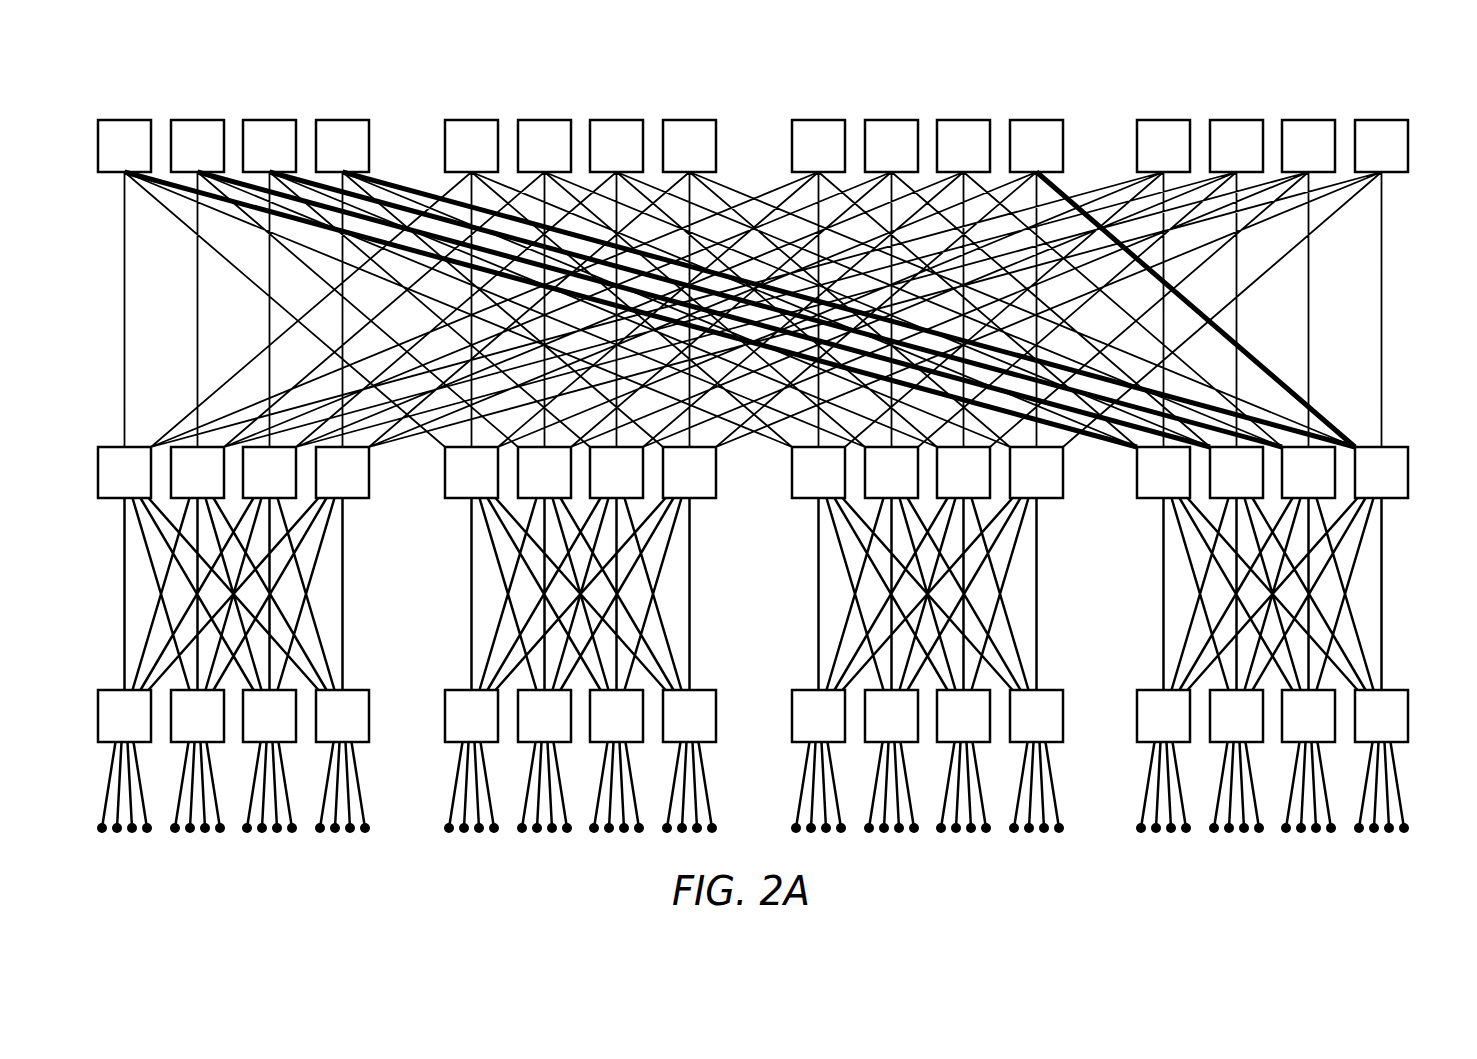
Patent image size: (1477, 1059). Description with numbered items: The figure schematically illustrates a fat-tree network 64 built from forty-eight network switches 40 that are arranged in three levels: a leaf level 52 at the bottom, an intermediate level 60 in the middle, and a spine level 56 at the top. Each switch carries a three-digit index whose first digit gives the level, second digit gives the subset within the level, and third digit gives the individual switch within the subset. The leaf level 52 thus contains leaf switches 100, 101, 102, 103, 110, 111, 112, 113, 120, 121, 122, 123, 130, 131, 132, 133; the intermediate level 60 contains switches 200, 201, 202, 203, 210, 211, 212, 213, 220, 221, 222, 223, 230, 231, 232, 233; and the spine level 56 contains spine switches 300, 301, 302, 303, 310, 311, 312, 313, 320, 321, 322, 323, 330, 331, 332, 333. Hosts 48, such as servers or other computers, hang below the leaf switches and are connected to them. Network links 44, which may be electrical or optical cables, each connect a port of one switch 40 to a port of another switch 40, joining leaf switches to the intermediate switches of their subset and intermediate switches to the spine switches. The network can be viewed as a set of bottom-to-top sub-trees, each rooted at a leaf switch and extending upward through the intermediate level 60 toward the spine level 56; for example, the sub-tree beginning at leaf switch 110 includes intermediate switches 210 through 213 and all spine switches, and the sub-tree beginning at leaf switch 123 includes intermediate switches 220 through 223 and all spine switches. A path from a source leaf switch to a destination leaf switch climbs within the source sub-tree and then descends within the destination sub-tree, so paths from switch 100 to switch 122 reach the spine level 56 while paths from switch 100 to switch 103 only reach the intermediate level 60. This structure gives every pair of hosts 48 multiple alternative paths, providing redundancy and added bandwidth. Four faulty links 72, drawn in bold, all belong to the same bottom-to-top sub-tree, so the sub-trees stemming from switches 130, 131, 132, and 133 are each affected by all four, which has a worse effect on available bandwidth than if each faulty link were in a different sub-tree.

The FT network 64 is at (154, 47).
The network switch 40 is at (552, 118).
The spine level 56 is at (1420, 146).
The intermediate level 60 is at (1420, 487).
The leaf level 52 is at (1420, 715).
The faulty link 72 is at (178, 192).
The network link 44 is at (197, 305).
The host 48 is at (102, 833).
The spine switch 300 is at (124, 146).
The spine switch 301 is at (197, 146).
The spine switch 302 is at (269, 146).
The spine switch 303 is at (342, 146).
The spine switch 310 is at (471, 146).
The spine switch 311 is at (544, 146).
The spine switch 312 is at (616, 146).
The spine switch 313 is at (689, 146).
The spine switch 320 is at (818, 146).
The spine switch 321 is at (891, 146).
The spine switch 322 is at (963, 146).
The spine switch 323 is at (1036, 146).
The spine switch 330 is at (1163, 146).
The spine switch 331 is at (1236, 146).
The spine switch 332 is at (1308, 146).
The spine switch 333 is at (1381, 146).
The intermediate switch 200 is at (124, 472).
The intermediate switch 201 is at (197, 472).
The intermediate switch 202 is at (269, 472).
The intermediate switch 203 is at (342, 472).
The intermediate switch 210 is at (471, 472).
The intermediate switch 211 is at (544, 472).
The intermediate switch 212 is at (616, 472).
The intermediate switch 213 is at (689, 472).
The intermediate switch 220 is at (818, 472).
The intermediate switch 221 is at (891, 472).
The intermediate switch 222 is at (963, 472).
The intermediate switch 223 is at (1036, 472).
The intermediate switch 230 is at (1163, 472).
The intermediate switch 231 is at (1236, 472).
The intermediate switch 232 is at (1308, 472).
The intermediate switch 233 is at (1381, 472).
The leaf switch 100 is at (124, 716).
The leaf switch 101 is at (197, 716).
The leaf switch 102 is at (269, 716).
The leaf switch 103 is at (342, 716).
The leaf switch 110 is at (471, 716).
The leaf switch 111 is at (544, 716).
The leaf switch 112 is at (616, 716).
The leaf switch 113 is at (689, 716).
The leaf switch 120 is at (818, 716).
The leaf switch 121 is at (891, 716).
The leaf switch 122 is at (963, 716).
The leaf switch 123 is at (1036, 716).
The leaf switch 130 is at (1163, 716).
The leaf switch 131 is at (1236, 716).
The leaf switch 132 is at (1308, 716).
The leaf switch 133 is at (1381, 716).